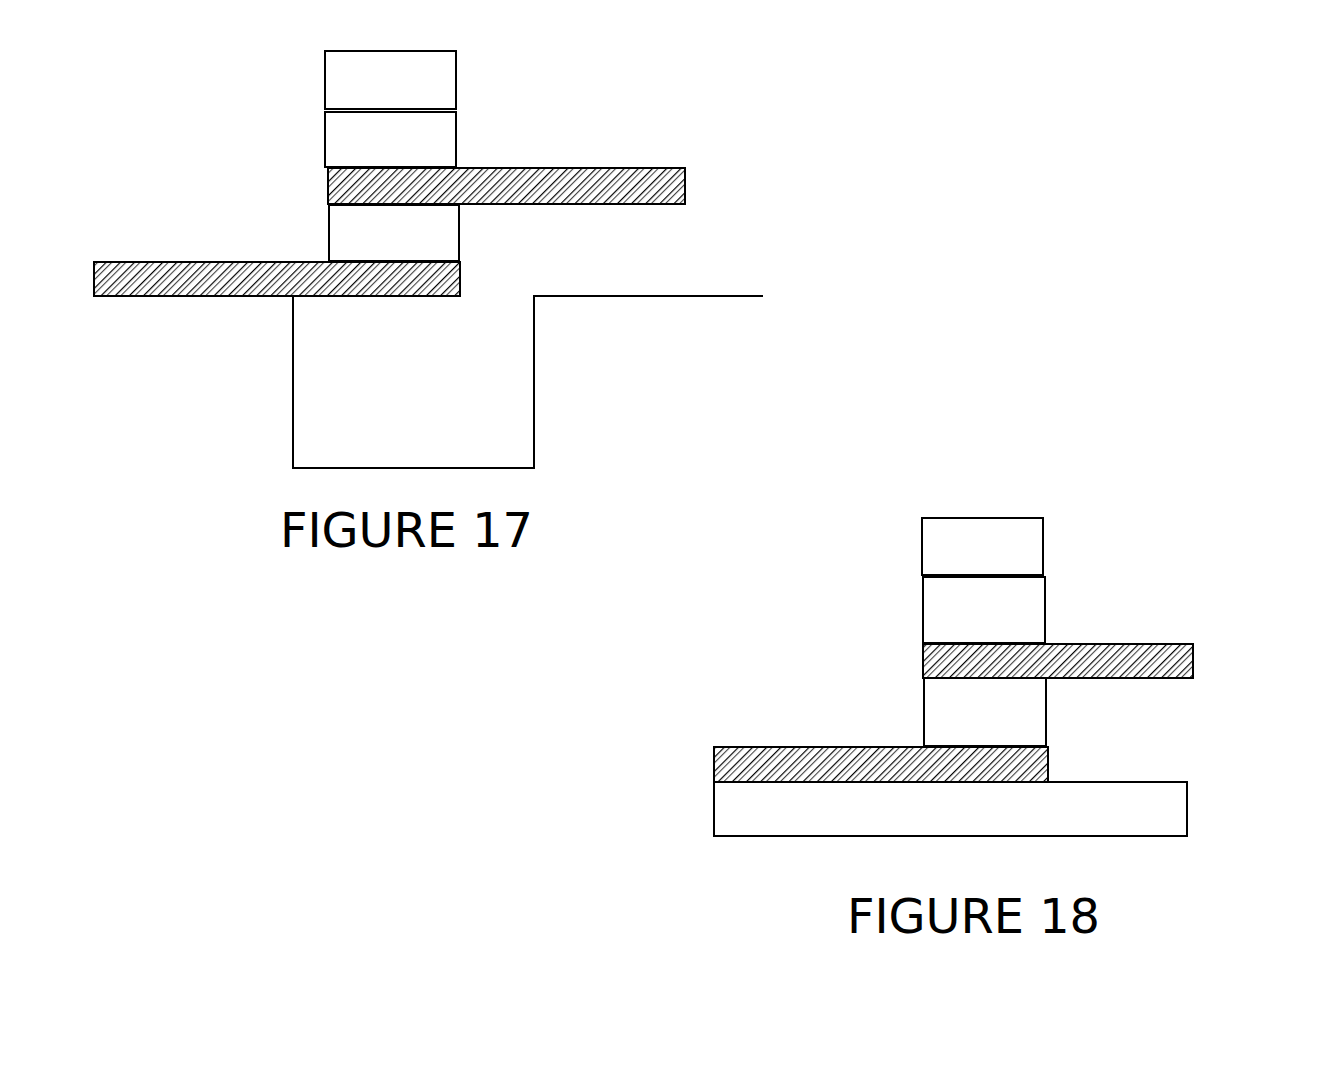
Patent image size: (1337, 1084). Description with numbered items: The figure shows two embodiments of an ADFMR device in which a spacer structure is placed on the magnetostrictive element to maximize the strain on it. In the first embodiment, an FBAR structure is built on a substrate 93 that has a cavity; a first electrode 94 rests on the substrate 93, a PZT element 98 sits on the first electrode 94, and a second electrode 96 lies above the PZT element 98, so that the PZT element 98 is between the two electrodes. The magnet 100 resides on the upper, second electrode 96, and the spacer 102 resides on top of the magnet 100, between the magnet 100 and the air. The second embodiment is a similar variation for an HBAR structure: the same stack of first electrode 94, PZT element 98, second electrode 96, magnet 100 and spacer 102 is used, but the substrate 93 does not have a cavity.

In FIG. 17, the substrate 93 is at (534, 385).
In FIG. 18, the substrate 93 is at (1187, 810).
In FIG. 17, the first electrode 94 is at (140, 261).
In FIG. 18, the first electrode 94 is at (750, 747).
In FIG. 17, the second electrode 96 is at (657, 166).
In FIG. 18, the second electrode 96 is at (1193, 667).
In FIG. 17, the PZT element 98 is at (328, 230).
In FIG. 18, the PZT element 98 is at (1046, 735).
In FIG. 17, the magnet 100 is at (457, 136).
In FIG. 18, the magnet 100 is at (1045, 597).
In FIG. 17, the spacer 102 is at (325, 83).
In FIG. 18, the spacer 102 is at (987, 518).